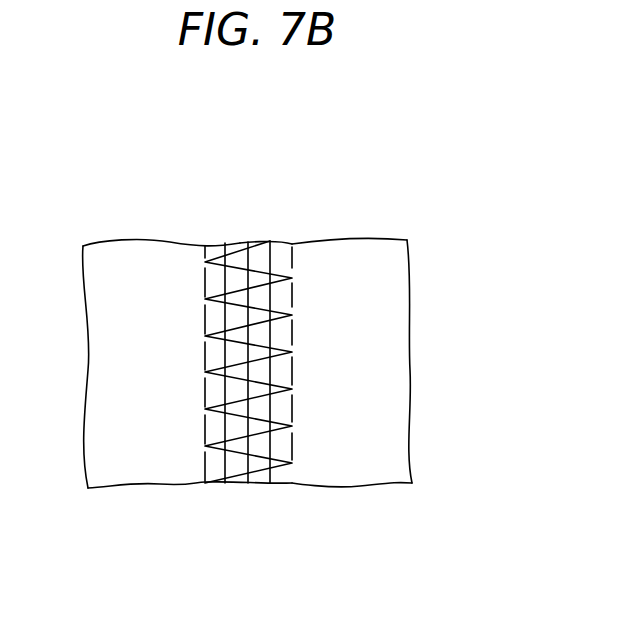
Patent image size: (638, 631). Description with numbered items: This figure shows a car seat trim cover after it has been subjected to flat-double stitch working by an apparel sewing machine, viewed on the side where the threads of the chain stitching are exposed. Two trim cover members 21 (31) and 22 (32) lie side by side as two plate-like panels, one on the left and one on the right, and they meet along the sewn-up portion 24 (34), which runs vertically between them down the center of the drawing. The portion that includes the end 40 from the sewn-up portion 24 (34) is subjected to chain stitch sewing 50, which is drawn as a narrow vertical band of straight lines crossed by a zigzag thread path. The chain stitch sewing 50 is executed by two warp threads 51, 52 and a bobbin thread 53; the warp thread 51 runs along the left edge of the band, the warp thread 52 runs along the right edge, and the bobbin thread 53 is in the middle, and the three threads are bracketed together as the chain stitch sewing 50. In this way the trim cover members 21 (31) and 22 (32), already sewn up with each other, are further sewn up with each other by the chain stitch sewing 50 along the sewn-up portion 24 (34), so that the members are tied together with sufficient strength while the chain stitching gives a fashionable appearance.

The trim cover member 21 is at (352, 398).
The trim cover member 31 is at (347, 462).
The trim cover member 22 is at (161, 399).
The trim cover member 32 is at (132, 466).
The sewn-up portion 24 is at (248, 400).
The sewn-up portion 34 is at (248, 443).
The end 40 is at (247, 355).
The chain stitch sewing 50 is at (247, 317).
The warp thread 51 is at (204, 280).
The warp thread 52 is at (303, 324).
The bobbin thread 53 is at (234, 244).